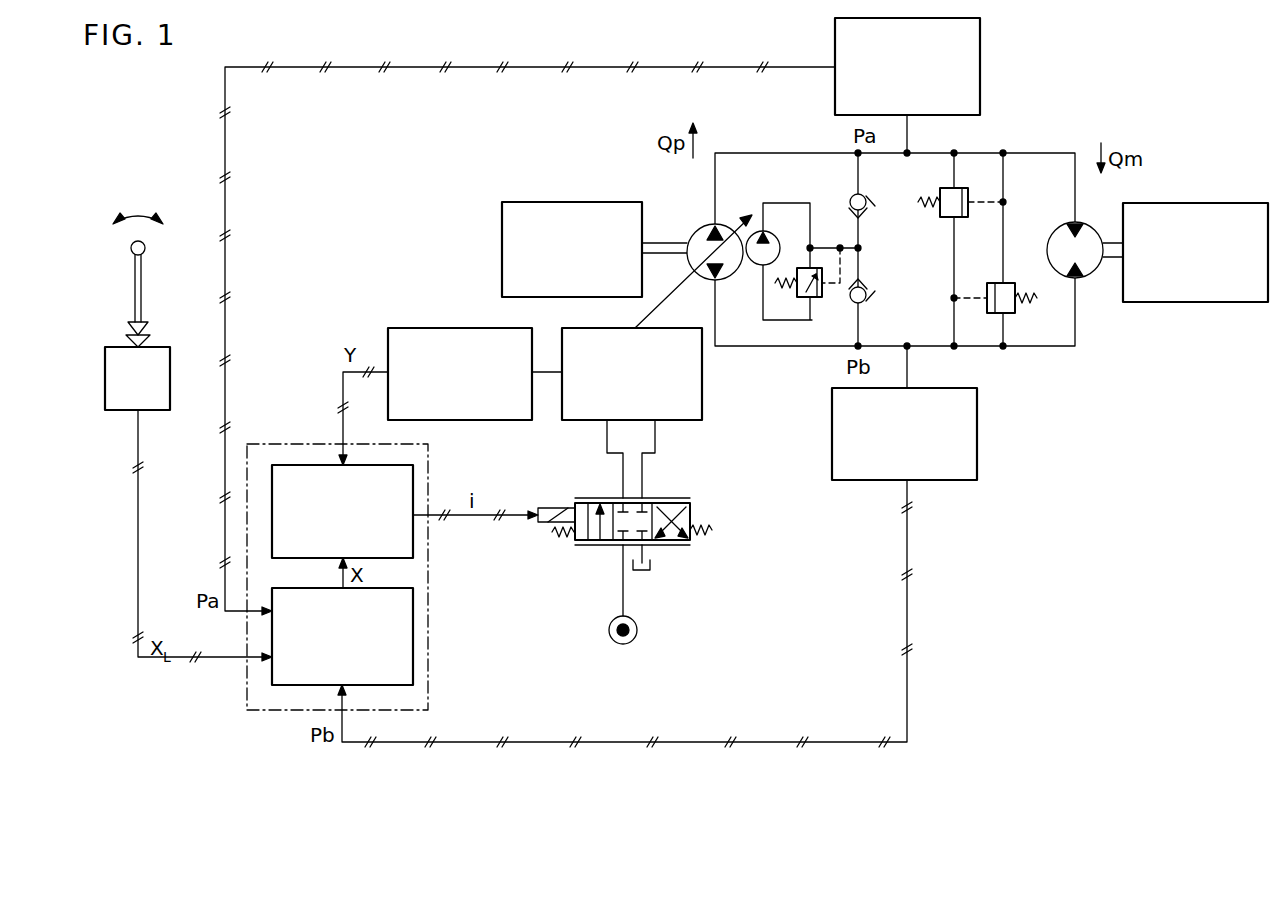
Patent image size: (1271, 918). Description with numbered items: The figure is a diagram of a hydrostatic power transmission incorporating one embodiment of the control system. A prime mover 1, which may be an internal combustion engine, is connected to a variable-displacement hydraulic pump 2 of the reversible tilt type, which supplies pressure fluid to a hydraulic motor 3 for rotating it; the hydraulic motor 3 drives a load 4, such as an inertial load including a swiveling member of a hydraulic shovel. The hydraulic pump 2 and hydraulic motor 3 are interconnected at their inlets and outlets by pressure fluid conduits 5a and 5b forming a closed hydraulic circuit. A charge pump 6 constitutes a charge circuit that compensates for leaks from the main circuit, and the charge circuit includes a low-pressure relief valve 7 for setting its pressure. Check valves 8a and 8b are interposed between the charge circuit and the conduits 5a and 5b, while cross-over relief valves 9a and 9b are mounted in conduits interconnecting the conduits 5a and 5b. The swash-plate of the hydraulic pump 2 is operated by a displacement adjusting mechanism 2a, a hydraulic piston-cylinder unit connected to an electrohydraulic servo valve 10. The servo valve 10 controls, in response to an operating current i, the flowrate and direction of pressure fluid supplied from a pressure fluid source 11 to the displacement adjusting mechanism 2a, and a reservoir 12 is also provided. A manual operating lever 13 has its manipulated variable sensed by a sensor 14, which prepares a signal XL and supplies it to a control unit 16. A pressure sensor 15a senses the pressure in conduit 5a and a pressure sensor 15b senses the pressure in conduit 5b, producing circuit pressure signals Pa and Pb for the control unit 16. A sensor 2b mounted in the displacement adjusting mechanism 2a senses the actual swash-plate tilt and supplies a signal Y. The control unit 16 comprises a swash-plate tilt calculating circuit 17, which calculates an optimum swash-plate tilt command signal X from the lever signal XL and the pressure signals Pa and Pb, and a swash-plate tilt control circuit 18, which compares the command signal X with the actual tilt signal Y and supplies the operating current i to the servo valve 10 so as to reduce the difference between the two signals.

The prime mover 1 is at (518, 202).
The variable-displacement hydraulic pump 2 is at (695, 222).
The hydraulic pump displacement adjusting mechanism 2a is at (702, 402).
The sensor 2b is at (485, 420).
The hydraulic motor 3 is at (1048, 240).
The load 4 is at (1200, 203).
The pressure fluid conduit 5a is at (930, 153).
The pressure fluid conduit 5b is at (930, 348).
The charge pump 6 is at (780, 238).
The low-pressure relief valve 7 is at (822, 297).
The check valve 8a is at (866, 212).
The check valve 8b is at (867, 293).
The cross-over relief valve 9a is at (954, 191).
The cross-over relief valve 9b is at (1010, 313).
The servo valve 10 is at (690, 508).
The pressure fluid source 11 is at (637, 626).
The reservoir 12 is at (650, 568).
The operating lever 13 is at (141, 270).
The sensor 14 is at (117, 410).
The pressure sensor 15a is at (980, 50).
The pressure sensor 15b is at (977, 440).
The control unit 16 is at (268, 442).
The swash-plate tilt calculating circuit 17 is at (413, 640).
The swash-plate tilt control circuit 18 is at (413, 545).